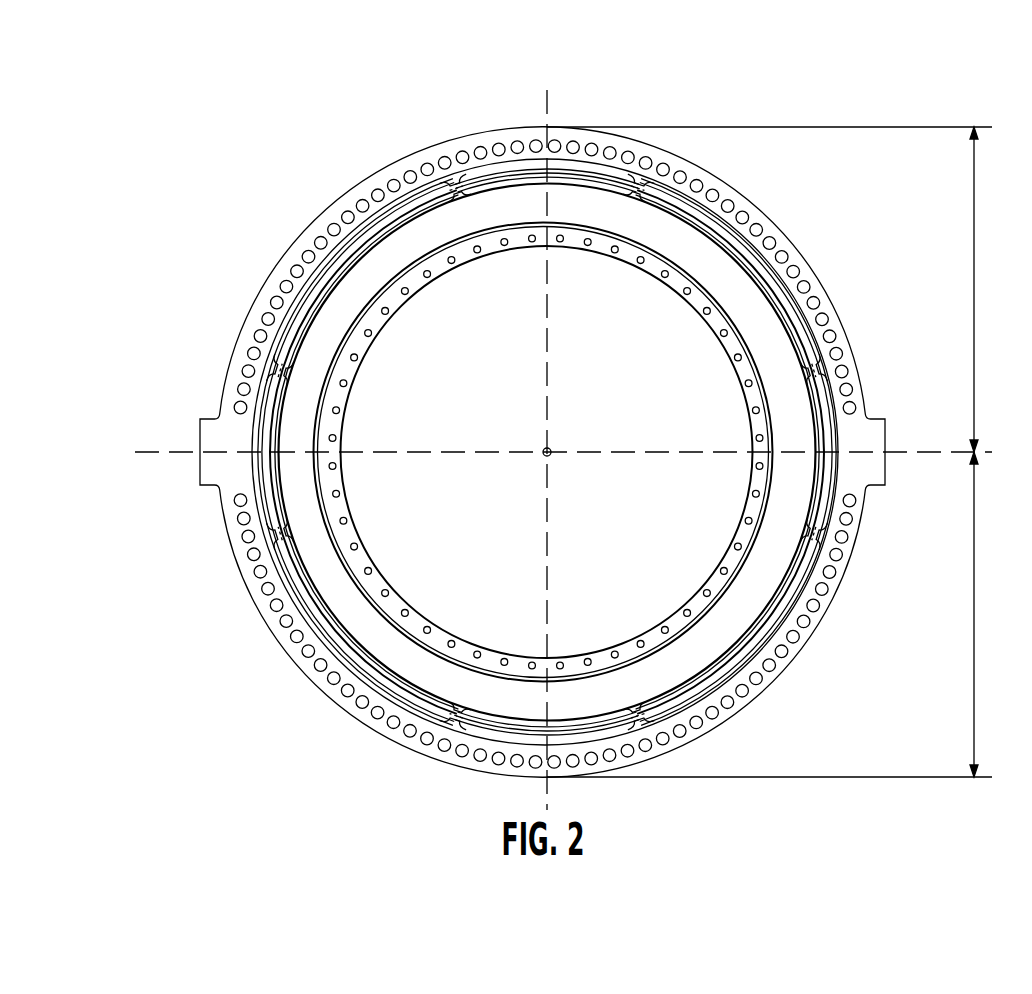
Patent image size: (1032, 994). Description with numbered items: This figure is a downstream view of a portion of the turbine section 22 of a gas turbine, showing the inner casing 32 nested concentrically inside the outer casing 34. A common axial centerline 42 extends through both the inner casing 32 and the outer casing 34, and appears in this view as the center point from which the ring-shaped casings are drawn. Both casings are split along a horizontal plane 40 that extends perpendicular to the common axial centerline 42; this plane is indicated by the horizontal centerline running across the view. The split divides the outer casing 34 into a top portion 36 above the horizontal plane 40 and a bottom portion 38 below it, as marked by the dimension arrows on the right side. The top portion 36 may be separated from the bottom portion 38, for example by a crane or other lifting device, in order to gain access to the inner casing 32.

The turbine section 22 is at (515, 430).
The inner casing 32 is at (345, 502).
The outer casing 34 is at (231, 551).
The top portion 36 is at (781, 289).
The bottom portion 38 is at (781, 614).
The horizontal plane 40 is at (590, 452).
The common axial centerline 42 is at (549, 456).